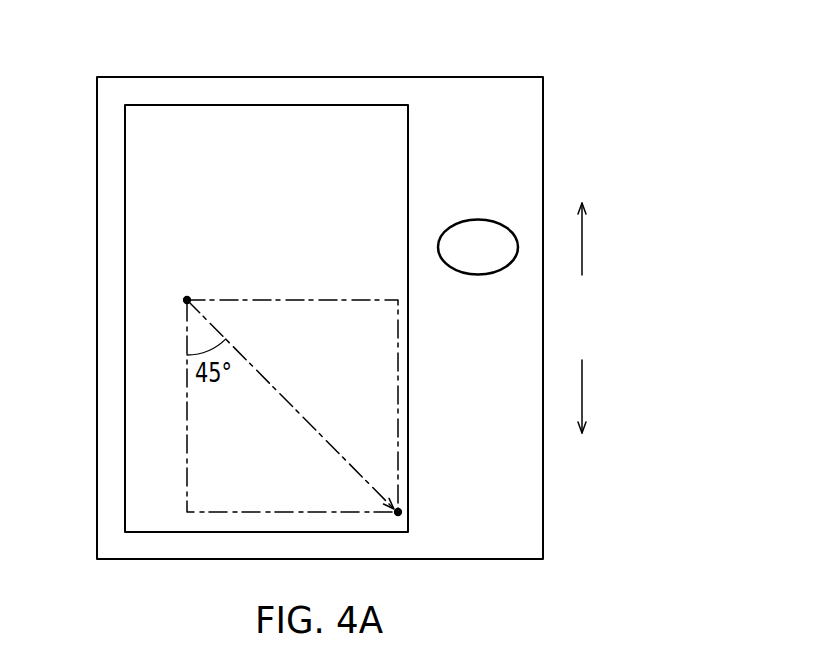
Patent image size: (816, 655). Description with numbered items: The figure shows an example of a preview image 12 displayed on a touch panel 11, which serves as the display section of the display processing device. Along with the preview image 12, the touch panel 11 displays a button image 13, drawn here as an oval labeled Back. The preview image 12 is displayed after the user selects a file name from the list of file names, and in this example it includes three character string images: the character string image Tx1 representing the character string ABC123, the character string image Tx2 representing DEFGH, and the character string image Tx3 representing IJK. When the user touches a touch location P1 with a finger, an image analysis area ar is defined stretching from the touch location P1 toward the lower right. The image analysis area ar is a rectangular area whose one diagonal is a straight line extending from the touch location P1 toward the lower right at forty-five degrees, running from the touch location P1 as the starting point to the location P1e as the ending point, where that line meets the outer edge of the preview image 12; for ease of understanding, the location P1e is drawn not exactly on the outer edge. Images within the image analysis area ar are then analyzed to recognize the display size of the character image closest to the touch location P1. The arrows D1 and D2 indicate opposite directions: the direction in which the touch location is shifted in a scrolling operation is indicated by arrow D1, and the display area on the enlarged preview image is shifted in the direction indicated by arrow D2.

The touch panel 11 is at (512, 77).
The preview image 12 is at (155, 105).
The button image 13 is at (480, 220).
The character string image Tx1 is at (232, 128).
The character string image Tx2 is at (232, 300).
The character string image Tx3 is at (140, 450).
The touch location P1 is at (187, 300).
The location P1e is at (400, 513).
The image analysis area ar is at (311, 300).
The arrow D1 is at (583, 390).
The arrow D2 is at (583, 245).